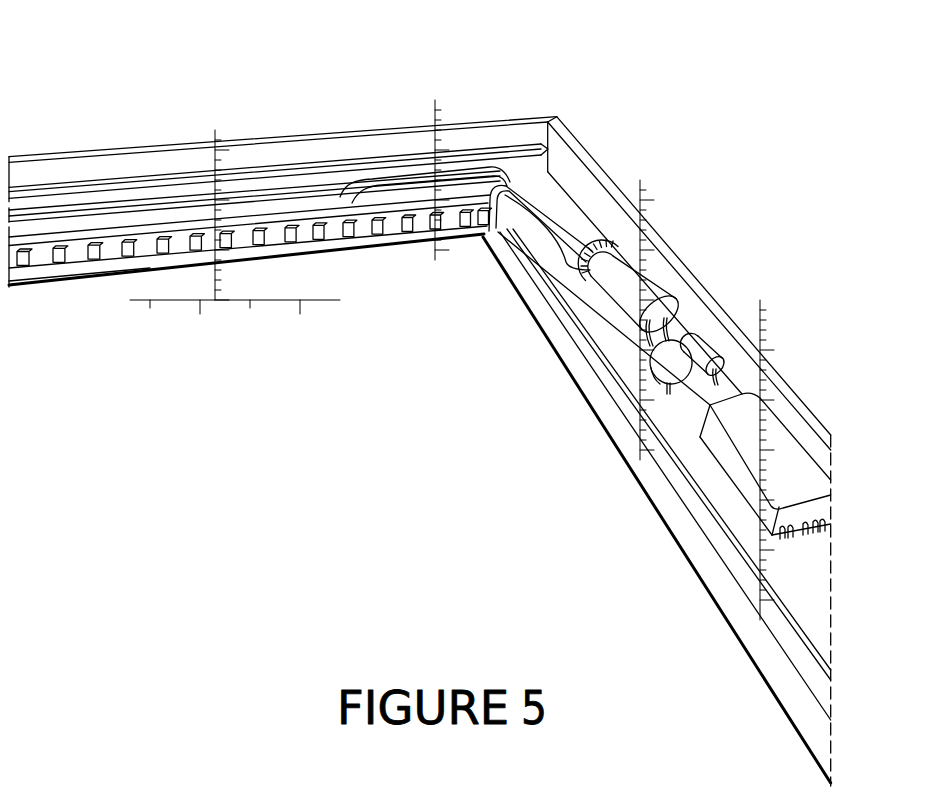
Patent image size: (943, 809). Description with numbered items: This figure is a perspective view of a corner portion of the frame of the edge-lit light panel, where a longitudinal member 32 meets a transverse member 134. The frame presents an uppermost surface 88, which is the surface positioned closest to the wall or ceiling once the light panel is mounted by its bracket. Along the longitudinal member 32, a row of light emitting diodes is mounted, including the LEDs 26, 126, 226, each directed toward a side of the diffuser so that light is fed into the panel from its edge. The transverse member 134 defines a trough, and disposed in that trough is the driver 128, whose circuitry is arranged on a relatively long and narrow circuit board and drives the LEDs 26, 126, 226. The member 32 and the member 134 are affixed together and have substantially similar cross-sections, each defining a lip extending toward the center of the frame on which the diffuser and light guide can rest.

The longitudinal member 32 is at (147, 157).
The uppermost surface 88 is at (300, 135).
The transverse member 134 is at (641, 222).
The light emitting diode 26 is at (58, 257).
The light emitting diode 126 is at (197, 250).
The light emitting diode 226 is at (373, 234).
The driver 128 is at (724, 474).